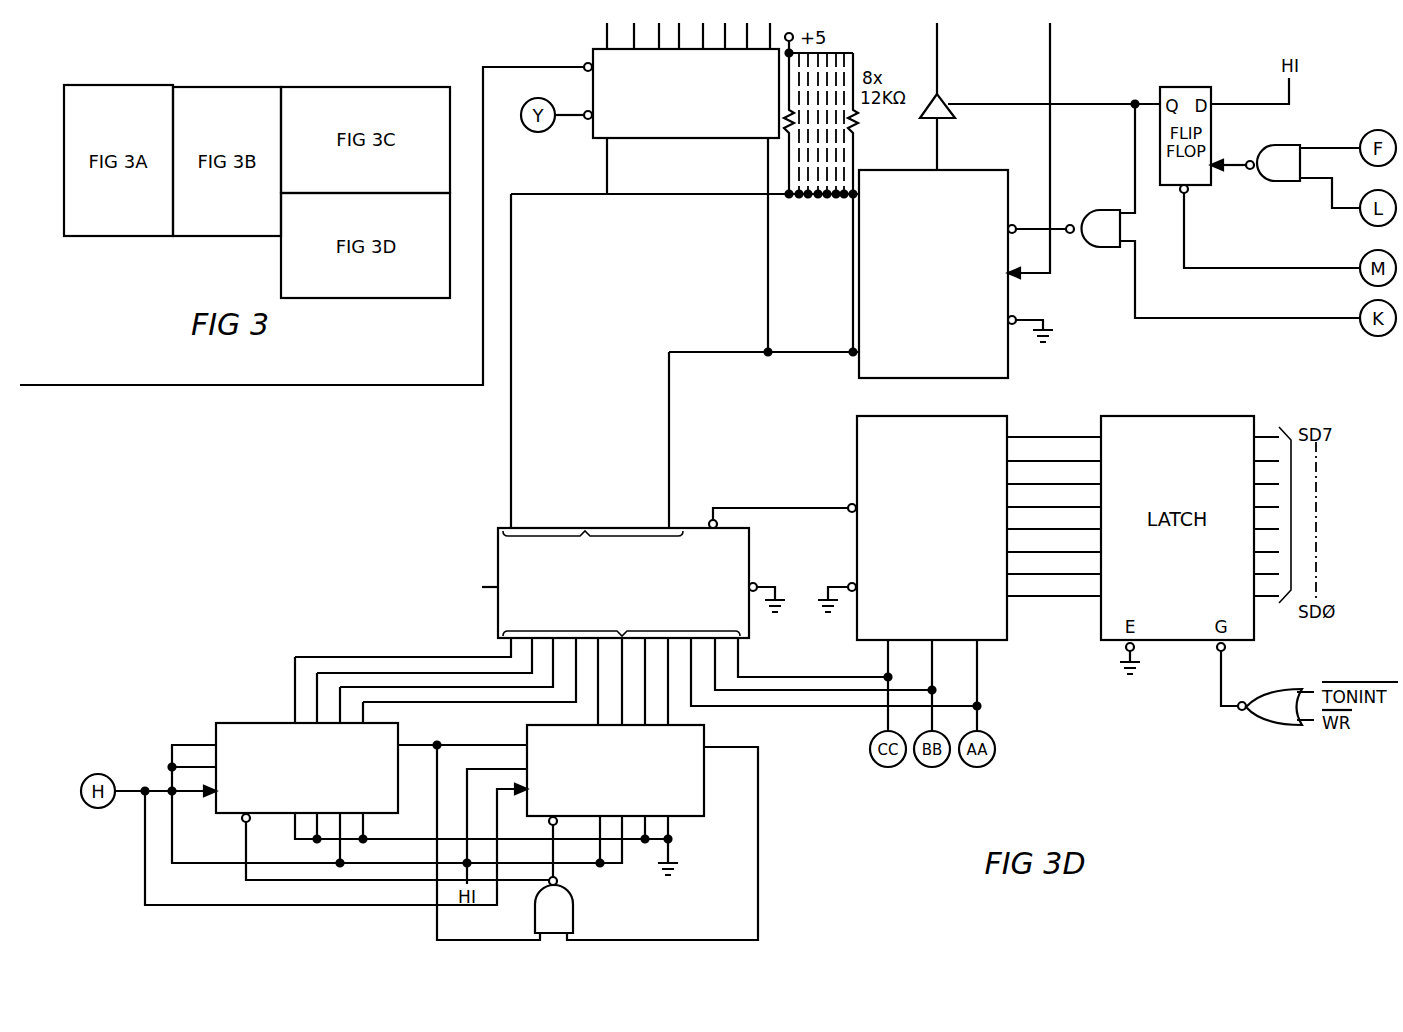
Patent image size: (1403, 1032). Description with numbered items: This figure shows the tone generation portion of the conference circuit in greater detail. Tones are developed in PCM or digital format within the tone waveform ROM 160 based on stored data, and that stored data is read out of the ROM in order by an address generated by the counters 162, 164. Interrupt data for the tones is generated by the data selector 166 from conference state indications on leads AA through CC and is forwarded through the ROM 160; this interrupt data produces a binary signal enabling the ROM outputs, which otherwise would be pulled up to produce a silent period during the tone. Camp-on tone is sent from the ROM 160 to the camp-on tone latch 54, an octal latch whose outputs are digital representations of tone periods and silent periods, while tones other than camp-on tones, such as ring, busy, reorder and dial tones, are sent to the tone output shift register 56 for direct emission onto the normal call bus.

The camp-on tone latch 54 is at (738, 139).
The tone output shift register 56 is at (1006, 378).
The tone waveform ROM 160 is at (566, 528).
The counter 162 is at (231, 723).
The counter 164 is at (704, 730).
The data selector 166 is at (1005, 640).